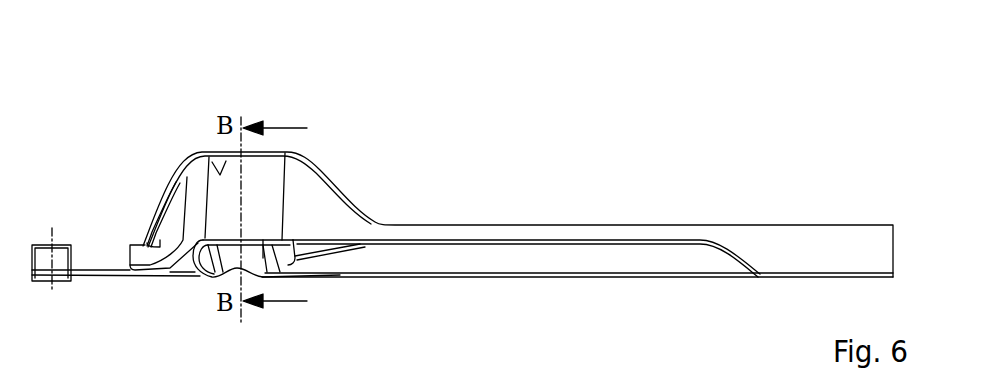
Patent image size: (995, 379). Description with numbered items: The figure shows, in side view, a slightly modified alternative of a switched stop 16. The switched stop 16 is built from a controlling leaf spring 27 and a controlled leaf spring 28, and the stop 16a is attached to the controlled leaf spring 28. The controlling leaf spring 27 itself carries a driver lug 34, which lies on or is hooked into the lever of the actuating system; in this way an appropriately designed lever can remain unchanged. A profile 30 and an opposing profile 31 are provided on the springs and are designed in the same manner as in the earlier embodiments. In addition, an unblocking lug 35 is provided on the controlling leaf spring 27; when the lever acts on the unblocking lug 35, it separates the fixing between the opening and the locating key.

The switched stop 16 is at (457, 190).
The stop 16a is at (43, 274).
The controlling leaf spring 27 is at (578, 242).
The controlled leaf spring 28 is at (342, 215).
The profile 30 is at (198, 182).
The opposing profile 31 is at (218, 152).
The driver lug 34 is at (218, 277).
The unblocking lug 35 is at (143, 257).